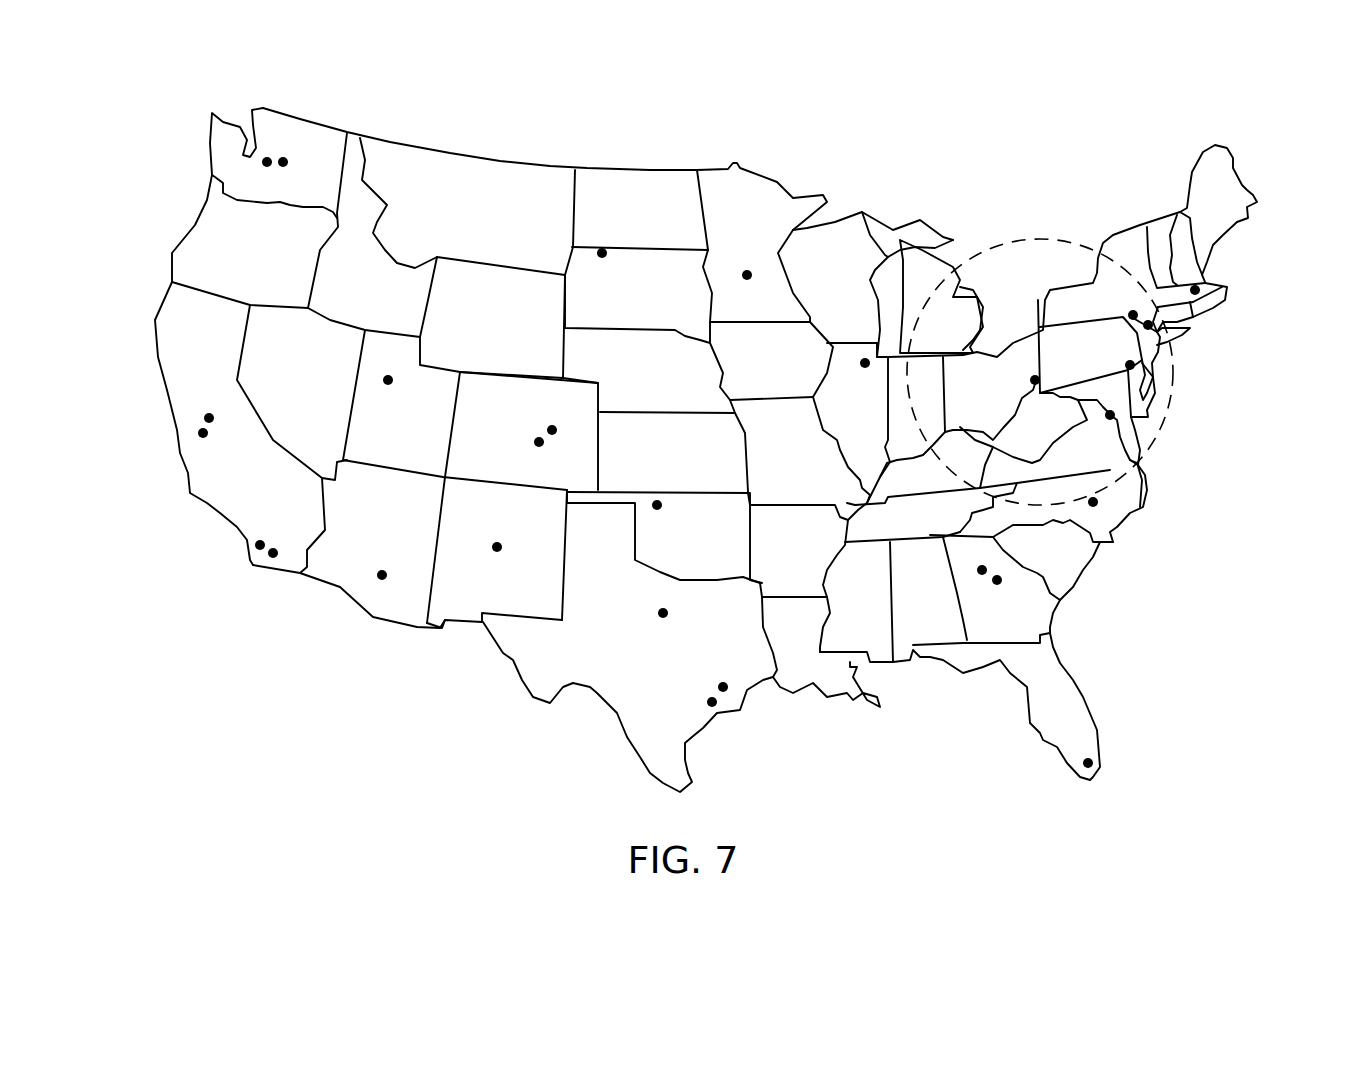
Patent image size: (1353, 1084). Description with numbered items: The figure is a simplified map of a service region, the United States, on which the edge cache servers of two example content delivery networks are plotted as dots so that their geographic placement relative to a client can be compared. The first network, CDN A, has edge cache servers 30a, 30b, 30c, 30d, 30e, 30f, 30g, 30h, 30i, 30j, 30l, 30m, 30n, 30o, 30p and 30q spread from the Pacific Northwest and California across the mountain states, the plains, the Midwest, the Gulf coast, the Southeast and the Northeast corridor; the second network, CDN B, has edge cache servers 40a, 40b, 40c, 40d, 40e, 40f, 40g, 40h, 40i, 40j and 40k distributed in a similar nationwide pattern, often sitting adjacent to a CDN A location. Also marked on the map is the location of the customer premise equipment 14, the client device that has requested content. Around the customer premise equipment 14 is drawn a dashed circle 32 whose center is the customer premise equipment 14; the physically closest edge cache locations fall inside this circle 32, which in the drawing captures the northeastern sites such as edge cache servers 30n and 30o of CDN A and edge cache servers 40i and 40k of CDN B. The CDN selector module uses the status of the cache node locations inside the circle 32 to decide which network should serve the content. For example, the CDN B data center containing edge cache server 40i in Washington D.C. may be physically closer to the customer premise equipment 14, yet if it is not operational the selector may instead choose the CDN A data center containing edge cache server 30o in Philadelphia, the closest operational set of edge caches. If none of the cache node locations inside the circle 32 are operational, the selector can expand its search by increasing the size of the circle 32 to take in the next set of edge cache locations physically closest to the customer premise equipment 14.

The customer premise equipment 14 is at (1033, 376).
The circle 32 is at (1050, 237).
The edge cache server 30a is at (285, 155).
The edge cache server 30b is at (209, 413).
The edge cache server 30c is at (255, 546).
The edge cache server 30d is at (390, 385).
The edge cache server 30e is at (382, 570).
The edge cache server 30f is at (535, 447).
The edge cache server 30g is at (602, 258).
The edge cache server 30h is at (670, 615).
The edge cache server 30i is at (717, 687).
The edge cache server 30j is at (865, 358).
The edge cache server 30l is at (978, 572).
The edge cache server 30m is at (1093, 507).
The edge cache server 30n is at (1133, 365).
The edge cache server 30o is at (1153, 325).
The edge cache server 30p is at (1202, 290).
The edge cache server 30q is at (1088, 768).
The CDN B edge cache server 40a is at (262, 162).
The CDN B edge cache server 40b is at (200, 433).
The CDN B edge cache server 40c is at (273, 558).
The CDN B edge cache server 40d is at (495, 553).
The CDN B edge cache server 40e is at (548, 430).
The CDN B edge cache server 40f is at (657, 500).
The CDN B edge cache server 40g is at (717, 707).
The CDN B edge cache server 40h is at (1000, 585).
The CDN B edge cache server 40i is at (1110, 418).
The CDN B edge cache server 40j is at (747, 270).
The CDN B edge cache server 40k is at (1140, 315).